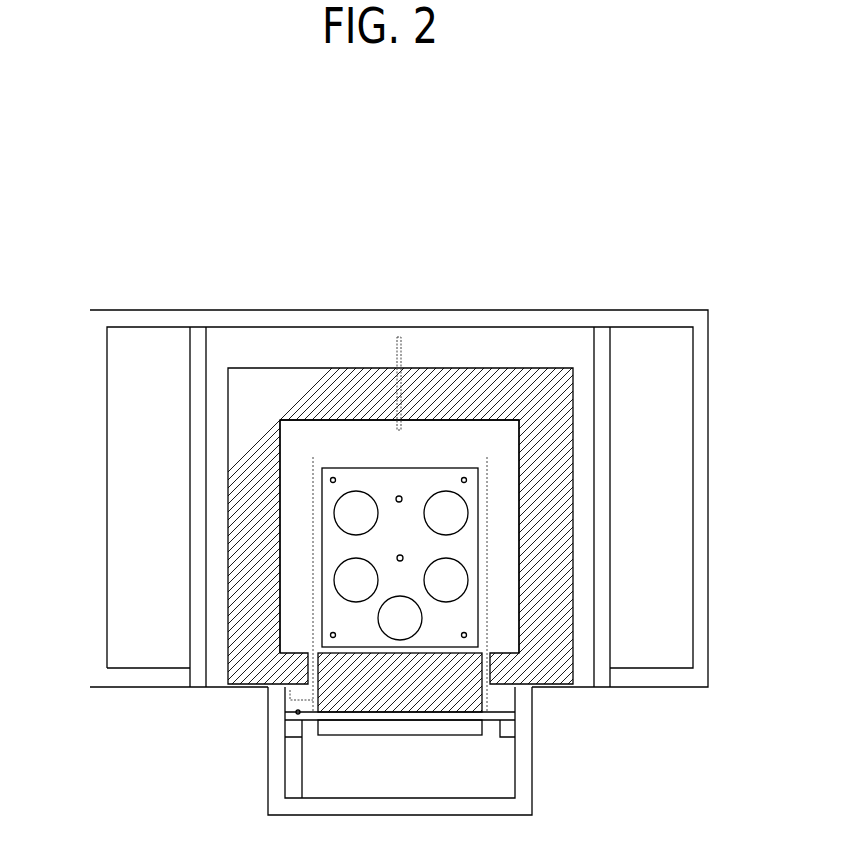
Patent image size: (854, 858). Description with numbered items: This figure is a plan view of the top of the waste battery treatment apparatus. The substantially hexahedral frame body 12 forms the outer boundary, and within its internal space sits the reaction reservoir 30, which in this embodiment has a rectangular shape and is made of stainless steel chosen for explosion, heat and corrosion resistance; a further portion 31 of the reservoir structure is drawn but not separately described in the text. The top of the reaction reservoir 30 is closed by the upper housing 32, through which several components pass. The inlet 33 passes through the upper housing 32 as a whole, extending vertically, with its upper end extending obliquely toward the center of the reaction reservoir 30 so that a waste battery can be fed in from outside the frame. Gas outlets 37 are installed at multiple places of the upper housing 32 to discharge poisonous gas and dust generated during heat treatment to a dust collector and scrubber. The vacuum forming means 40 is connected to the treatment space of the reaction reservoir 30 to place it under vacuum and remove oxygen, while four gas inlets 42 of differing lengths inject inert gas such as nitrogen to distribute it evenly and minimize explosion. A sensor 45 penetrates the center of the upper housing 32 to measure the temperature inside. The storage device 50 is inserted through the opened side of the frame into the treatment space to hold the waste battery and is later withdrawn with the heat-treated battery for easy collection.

The frame body 12 is at (637, 310).
The reaction reservoir 30 is at (574, 407).
The block body 31 is at (565, 435).
The upper housing 32 is at (300, 448).
The inlet 33 is at (330, 580).
The gas outlets 37 is at (330, 512).
The vacuum forming means 40 is at (399, 496).
The gas inlets 42 is at (333, 635).
The sensor 45 is at (400, 555).
The storage device 50 is at (533, 753).